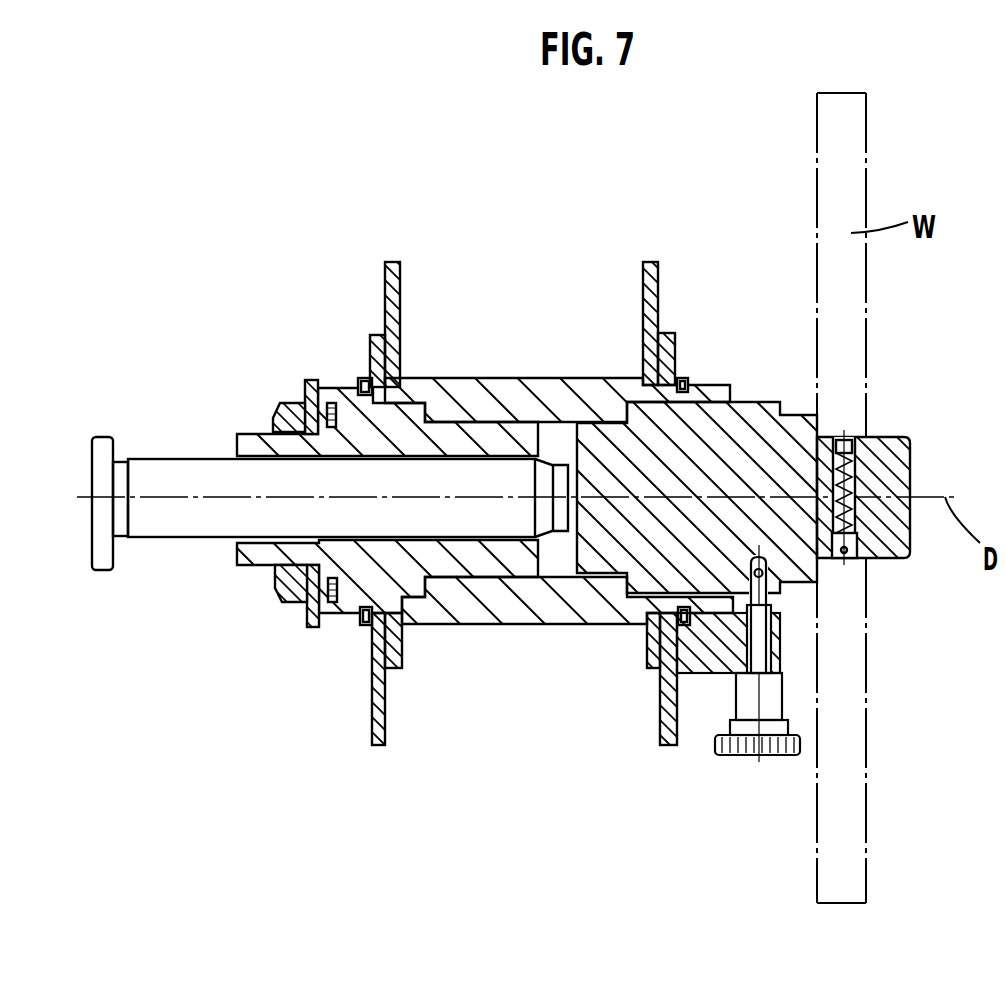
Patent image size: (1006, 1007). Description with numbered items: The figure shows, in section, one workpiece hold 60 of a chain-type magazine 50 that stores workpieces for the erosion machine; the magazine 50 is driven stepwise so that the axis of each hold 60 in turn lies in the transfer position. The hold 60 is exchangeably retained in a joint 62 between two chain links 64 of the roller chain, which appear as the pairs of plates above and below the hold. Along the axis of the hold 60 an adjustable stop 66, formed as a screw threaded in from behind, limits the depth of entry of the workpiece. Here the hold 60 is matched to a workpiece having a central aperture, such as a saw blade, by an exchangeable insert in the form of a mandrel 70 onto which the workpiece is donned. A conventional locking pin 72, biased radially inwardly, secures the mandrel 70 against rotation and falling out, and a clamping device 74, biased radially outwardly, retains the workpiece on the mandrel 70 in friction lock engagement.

The magazine 50 is at (466, 222).
The workpiece hold 60 is at (734, 337).
The joint 62 is at (513, 398).
The chain links 64 is at (382, 715).
The adjustable stop 66 is at (175, 522).
The mandrel 70 is at (752, 423).
The locking pin 72 is at (764, 596).
The clamping device 74 is at (870, 470).